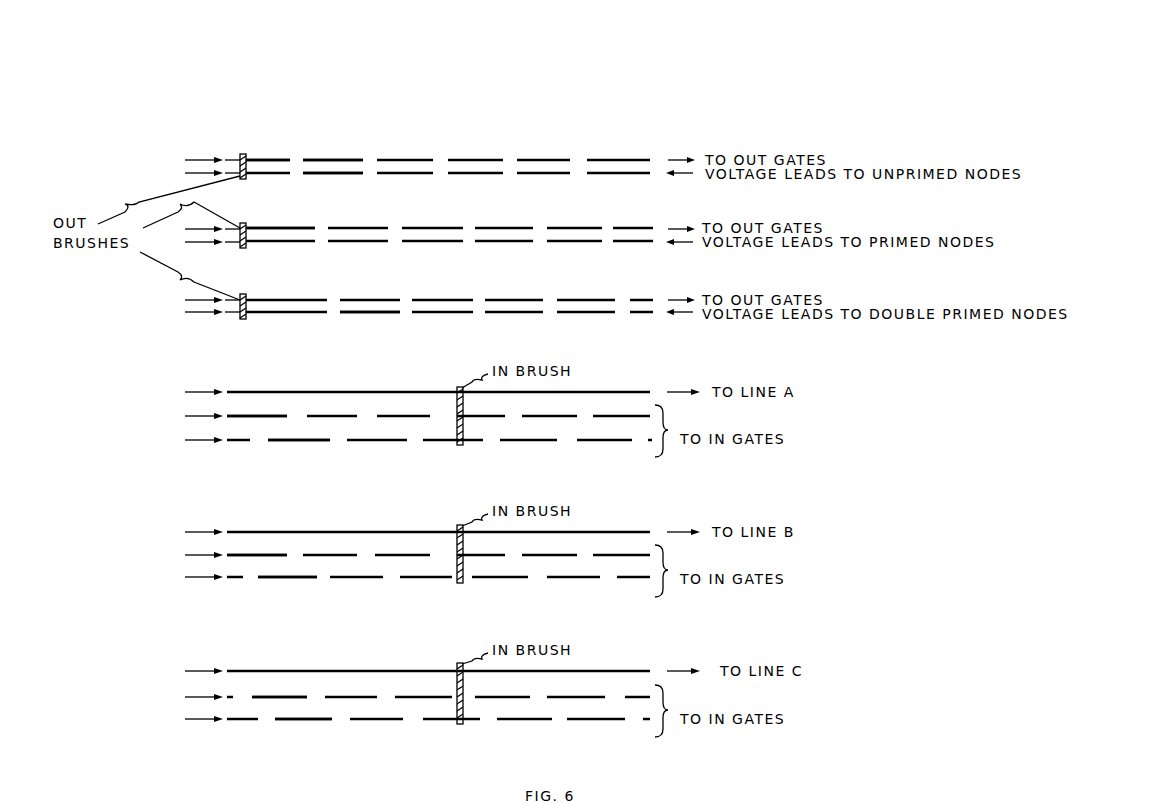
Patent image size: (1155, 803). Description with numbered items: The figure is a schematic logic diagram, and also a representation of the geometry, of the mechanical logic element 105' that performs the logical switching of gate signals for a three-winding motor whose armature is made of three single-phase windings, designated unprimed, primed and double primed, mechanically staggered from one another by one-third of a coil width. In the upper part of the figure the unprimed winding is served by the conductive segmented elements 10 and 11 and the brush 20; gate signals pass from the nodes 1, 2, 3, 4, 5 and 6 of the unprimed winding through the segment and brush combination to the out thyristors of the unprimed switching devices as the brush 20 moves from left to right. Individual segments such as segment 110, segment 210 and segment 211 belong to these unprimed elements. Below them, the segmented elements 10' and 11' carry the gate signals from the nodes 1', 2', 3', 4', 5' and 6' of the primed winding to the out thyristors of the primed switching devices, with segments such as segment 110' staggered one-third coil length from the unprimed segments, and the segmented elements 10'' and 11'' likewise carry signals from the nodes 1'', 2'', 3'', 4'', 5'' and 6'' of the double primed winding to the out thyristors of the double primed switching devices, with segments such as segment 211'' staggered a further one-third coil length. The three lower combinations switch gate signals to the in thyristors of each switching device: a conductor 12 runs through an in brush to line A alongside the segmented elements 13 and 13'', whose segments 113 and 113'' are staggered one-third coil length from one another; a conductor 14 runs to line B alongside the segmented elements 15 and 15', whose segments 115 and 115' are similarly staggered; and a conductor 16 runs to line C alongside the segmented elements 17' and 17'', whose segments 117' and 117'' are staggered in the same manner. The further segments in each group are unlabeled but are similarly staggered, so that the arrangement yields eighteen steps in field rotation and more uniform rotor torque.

The upper conductive segmented element 10 is at (200, 160).
The upper conductive segmented element 11 is at (200, 173).
The segmented element for primed winding 10' is at (198, 229).
The segmented element for primed winding 11' is at (198, 242).
The segmented element for double primed winding 10'' is at (198, 300).
The segmented element for double primed winding 11'' is at (198, 313).
The brush 20 is at (240, 158).
The mechanical logic element 105' is at (677, 86).
The segment 110 is at (280, 128).
The segment 210 is at (362, 160).
The segment 110' is at (318, 208).
The segment 211 is at (321, 190).
The segment 211'' is at (356, 334).
The node 1 is at (268, 165).
The node 2 is at (333, 165).
The node 3 is at (405, 165).
The node 4 is at (475, 165).
The node 5 is at (543, 165).
The node 6 is at (618, 165).
The node 1' is at (280, 233).
The node 2' is at (358, 233).
The node 3' is at (432, 233).
The node 4' is at (504, 233).
The node 5' is at (574, 233).
The node 6' is at (634, 233).
The node 1'' is at (286, 309).
The node 2'' is at (370, 310).
The node 3'' is at (442, 310).
The node 4'' is at (514, 310).
The node 5'' is at (586, 309).
The node 6'' is at (646, 309).
The conductor to line A 12 is at (405, 392).
The segmented element 13 is at (405, 416).
The segmented element 13'' is at (406, 440).
The segment 113 is at (267, 406).
The segment 113'' is at (299, 464).
The conductor to line B 14 is at (405, 532).
The segmented element 15 is at (405, 555).
The segmented element 15' is at (405, 577).
The segment 115 is at (262, 545).
The segment 115' is at (290, 567).
The conductor to line C 16 is at (405, 671).
The segmented element 17' is at (405, 697).
The segmented element 17'' is at (405, 719).
The segment 117' is at (279, 686).
The segment 117'' is at (310, 732).